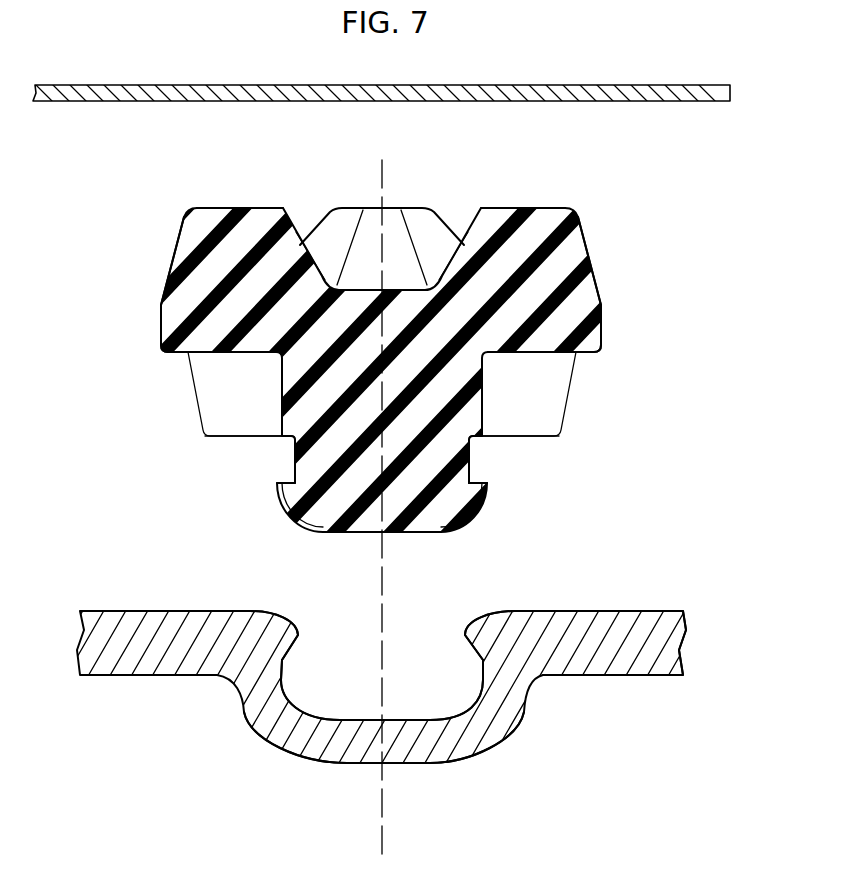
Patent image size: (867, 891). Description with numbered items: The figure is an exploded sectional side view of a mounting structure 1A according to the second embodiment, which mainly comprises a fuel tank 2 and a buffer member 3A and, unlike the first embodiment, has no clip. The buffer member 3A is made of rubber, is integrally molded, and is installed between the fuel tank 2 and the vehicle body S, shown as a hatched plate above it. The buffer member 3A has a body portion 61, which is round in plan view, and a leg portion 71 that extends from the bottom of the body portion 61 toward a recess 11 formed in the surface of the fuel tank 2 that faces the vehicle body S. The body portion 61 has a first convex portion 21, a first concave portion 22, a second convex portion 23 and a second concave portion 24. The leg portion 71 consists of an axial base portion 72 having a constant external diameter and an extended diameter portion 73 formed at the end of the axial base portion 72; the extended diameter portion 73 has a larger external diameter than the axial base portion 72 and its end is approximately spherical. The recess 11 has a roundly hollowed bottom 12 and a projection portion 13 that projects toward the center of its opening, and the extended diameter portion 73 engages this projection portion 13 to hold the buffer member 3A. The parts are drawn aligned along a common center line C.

The vehicle body S is at (520, 85).
The center axis C is at (382, 840).
The buffer member 3A is at (121, 219).
The first convex portion 21 is at (219, 199).
The first concave portion 22 is at (301, 225).
The body portion 61 is at (134, 304).
The second concave portion 24 is at (203, 366).
The second convex portion 23 is at (216, 447).
The leg portion 71 is at (184, 482).
The axial base portion 72 is at (474, 460).
The extended diameter portion 73 is at (487, 480).
The mounting structure 1A is at (177, 720).
The projection portion 13 is at (296, 628).
The recess 11 is at (331, 685).
The bottom 12 is at (425, 700).
The fuel tank 2 is at (568, 768).